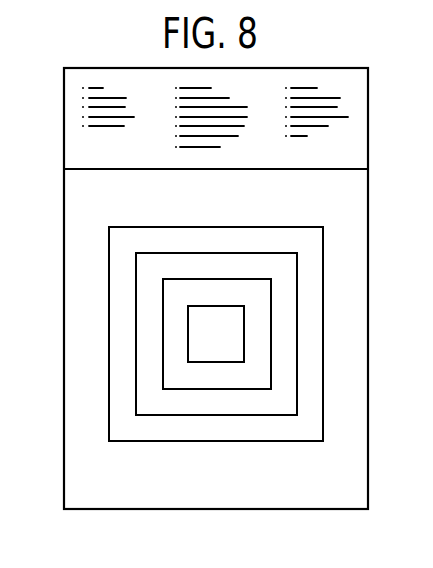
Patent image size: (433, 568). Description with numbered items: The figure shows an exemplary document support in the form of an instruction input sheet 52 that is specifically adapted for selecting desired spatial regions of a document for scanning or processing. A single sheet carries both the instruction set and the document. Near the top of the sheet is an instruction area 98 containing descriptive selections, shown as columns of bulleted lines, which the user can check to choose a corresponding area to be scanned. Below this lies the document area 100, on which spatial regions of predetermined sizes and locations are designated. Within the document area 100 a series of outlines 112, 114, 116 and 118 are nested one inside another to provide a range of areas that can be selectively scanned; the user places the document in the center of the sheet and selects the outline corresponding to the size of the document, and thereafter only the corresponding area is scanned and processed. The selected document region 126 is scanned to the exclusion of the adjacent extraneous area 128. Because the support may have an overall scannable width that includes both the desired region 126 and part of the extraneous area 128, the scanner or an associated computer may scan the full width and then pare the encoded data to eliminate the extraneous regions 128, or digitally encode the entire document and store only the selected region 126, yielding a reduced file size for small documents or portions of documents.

The instruction input sheet 52 is at (77, 153).
The instruction area 98 is at (78, 95).
The document area 100 is at (88, 473).
The outline 112 is at (109, 390).
The outline 114 is at (136, 363).
The outline 116 is at (163, 336).
The outline 118 is at (188, 308).
The selected document region 126 is at (285, 394).
The extraneous area 128 is at (160, 495).